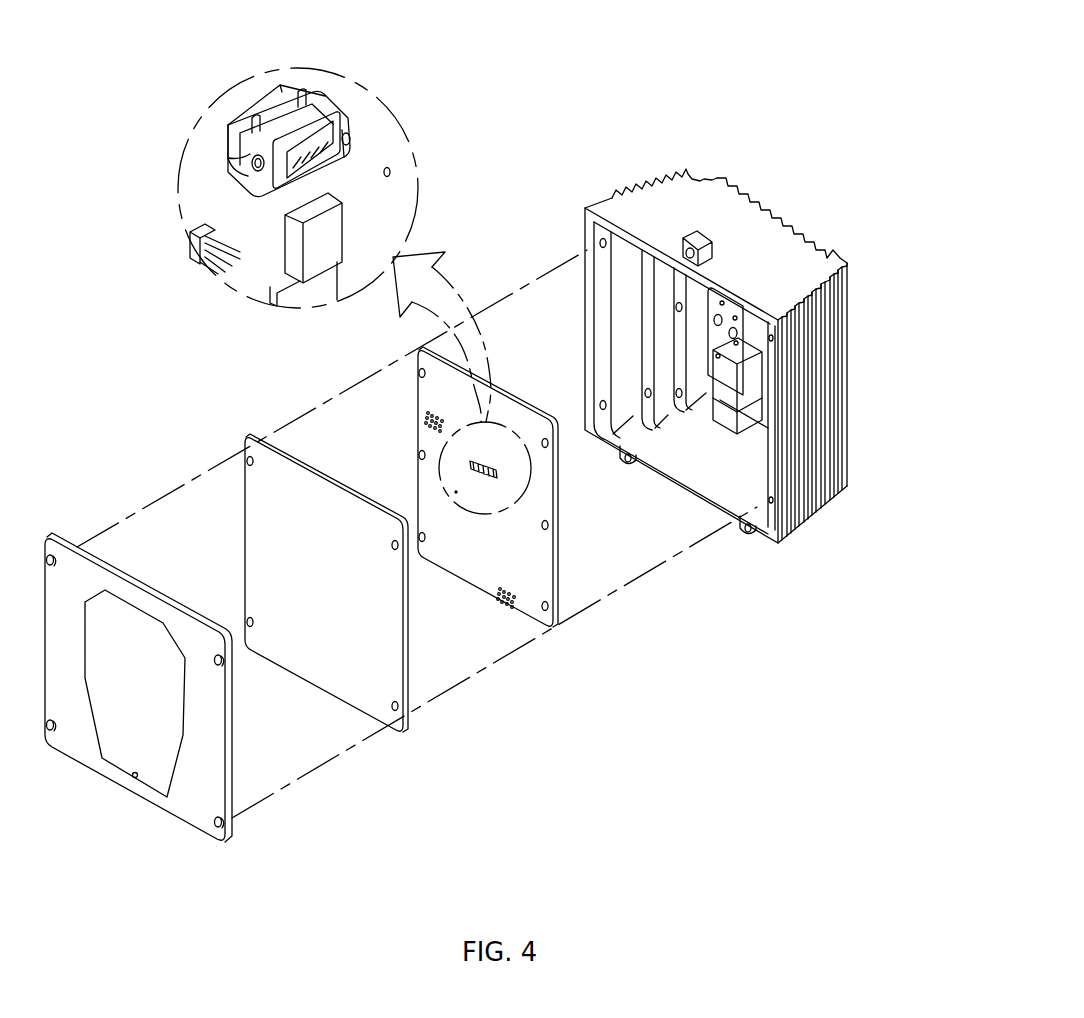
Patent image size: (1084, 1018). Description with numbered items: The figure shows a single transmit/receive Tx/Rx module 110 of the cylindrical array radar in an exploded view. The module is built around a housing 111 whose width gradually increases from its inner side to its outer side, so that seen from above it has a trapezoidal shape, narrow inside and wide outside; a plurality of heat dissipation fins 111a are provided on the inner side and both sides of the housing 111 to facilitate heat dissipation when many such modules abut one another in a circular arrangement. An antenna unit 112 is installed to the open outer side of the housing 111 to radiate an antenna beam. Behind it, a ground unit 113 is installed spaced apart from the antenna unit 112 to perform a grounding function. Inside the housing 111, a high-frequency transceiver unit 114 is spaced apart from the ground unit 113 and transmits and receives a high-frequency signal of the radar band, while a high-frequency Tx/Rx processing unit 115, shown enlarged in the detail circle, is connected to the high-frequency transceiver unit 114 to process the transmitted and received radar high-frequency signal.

The Tx/Rx module 110 is at (536, 47).
The housing 111 is at (763, 235).
The heat dissipation fins 111a is at (833, 358).
The antenna unit 112 is at (187, 805).
The ground unit 113 is at (402, 653).
The high-frequency transceiver unit 114 is at (555, 575).
The high-frequency Tx/Rx processing unit 115 is at (335, 232).